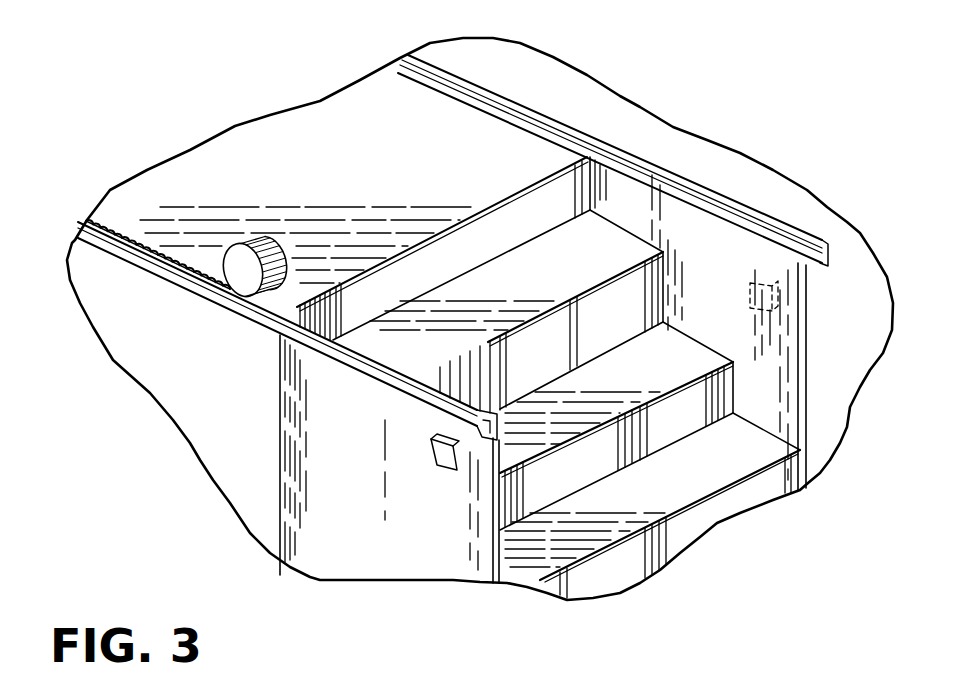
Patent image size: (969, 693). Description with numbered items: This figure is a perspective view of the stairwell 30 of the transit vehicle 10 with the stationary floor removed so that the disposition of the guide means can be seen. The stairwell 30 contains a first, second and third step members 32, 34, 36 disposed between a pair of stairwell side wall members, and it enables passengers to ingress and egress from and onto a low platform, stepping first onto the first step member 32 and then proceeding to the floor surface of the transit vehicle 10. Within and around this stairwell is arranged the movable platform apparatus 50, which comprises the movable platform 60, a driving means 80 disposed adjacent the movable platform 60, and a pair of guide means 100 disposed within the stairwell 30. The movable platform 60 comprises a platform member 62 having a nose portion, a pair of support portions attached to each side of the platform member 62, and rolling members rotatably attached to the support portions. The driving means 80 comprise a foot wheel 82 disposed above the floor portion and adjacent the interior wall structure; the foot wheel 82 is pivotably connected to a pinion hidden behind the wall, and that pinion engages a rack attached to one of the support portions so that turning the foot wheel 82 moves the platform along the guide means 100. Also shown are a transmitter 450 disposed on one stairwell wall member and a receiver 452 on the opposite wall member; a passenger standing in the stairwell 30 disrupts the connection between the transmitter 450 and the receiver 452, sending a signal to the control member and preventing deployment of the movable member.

The transit vehicle 10 is at (206, 61).
The stairwell 30 is at (722, 562).
The first step member 32 is at (733, 477).
The second step member 34 is at (660, 375).
The third step member 36 is at (587, 275).
The movable platform apparatus 50 is at (668, 96).
The movable platform 60 is at (178, 143).
The platform member 62 is at (431, 134).
The driving means 80 is at (187, 308).
The foot wheel 82 is at (263, 238).
The guide means 100 is at (729, 177).
The transmitter 450 is at (441, 468).
The receiver 452 is at (782, 300).